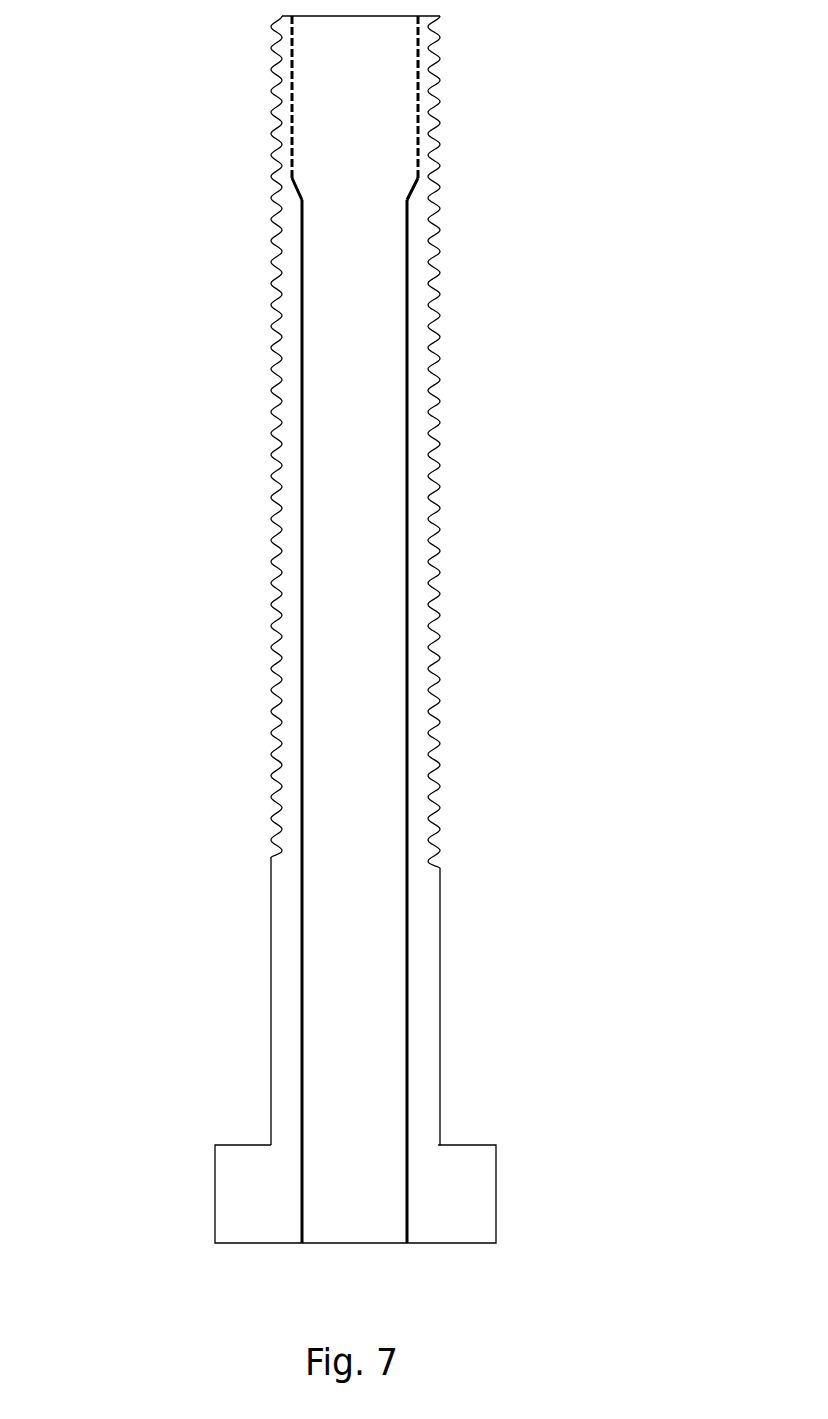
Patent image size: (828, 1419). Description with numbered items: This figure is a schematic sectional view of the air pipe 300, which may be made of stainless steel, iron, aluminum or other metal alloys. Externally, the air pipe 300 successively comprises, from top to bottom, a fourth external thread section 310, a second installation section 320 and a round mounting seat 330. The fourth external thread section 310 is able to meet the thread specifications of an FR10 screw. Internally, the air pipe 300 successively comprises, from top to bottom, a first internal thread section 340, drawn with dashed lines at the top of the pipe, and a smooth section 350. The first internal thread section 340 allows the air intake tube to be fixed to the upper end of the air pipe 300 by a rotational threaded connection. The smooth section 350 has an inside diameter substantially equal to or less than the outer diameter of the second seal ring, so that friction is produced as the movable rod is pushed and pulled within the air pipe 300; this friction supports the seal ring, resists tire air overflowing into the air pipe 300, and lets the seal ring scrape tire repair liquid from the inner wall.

The air pipe 300 is at (682, 80).
The fourth external thread section 310 is at (203, 23).
The second installation section 320 is at (178, 854).
The round mounting seat 330 is at (203, 1243).
The first internal thread section 340 is at (418, 140).
The smooth section 350 is at (407, 792).